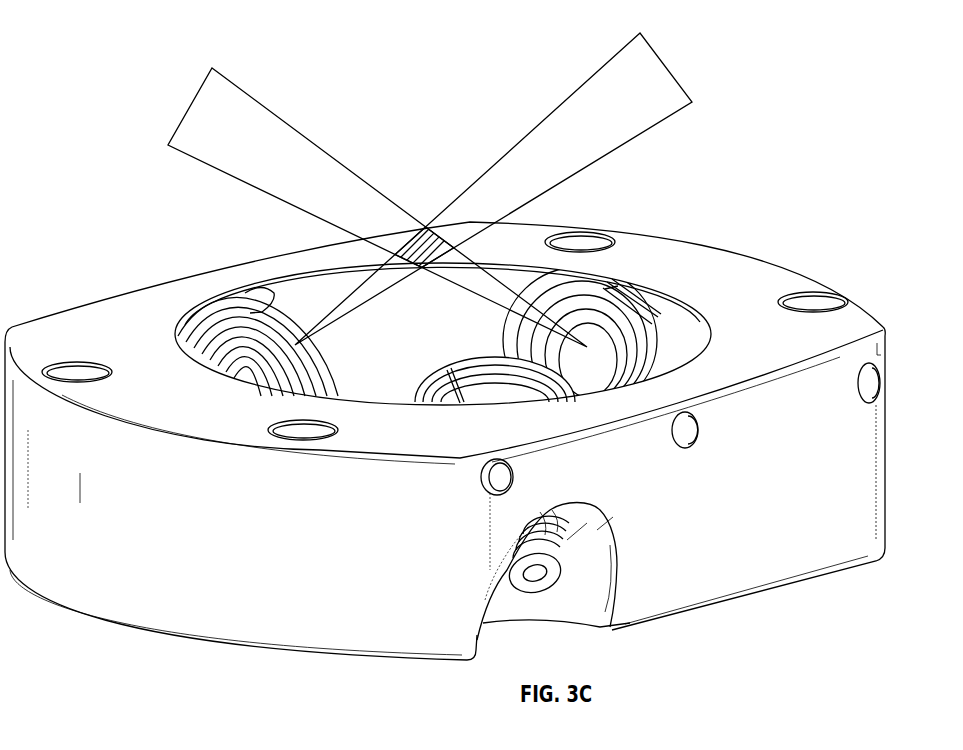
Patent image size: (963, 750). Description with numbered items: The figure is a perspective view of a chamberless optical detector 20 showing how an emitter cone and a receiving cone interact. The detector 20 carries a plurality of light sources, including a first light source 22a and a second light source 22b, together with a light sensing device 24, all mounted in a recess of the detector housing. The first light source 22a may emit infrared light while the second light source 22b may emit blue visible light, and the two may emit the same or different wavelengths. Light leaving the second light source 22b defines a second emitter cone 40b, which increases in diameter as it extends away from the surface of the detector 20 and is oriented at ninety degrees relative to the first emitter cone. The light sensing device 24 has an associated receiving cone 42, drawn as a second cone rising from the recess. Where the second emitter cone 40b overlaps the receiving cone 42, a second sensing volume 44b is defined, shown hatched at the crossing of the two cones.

The detector 20 is at (131, 337).
The first light source 22a is at (472, 397).
The second light source 22b is at (203, 327).
The light sensing device 24 is at (655, 321).
The second emitter cone 40b is at (667, 67).
The receiving cone 42 is at (298, 155).
The second sensing volume 44b is at (458, 243).